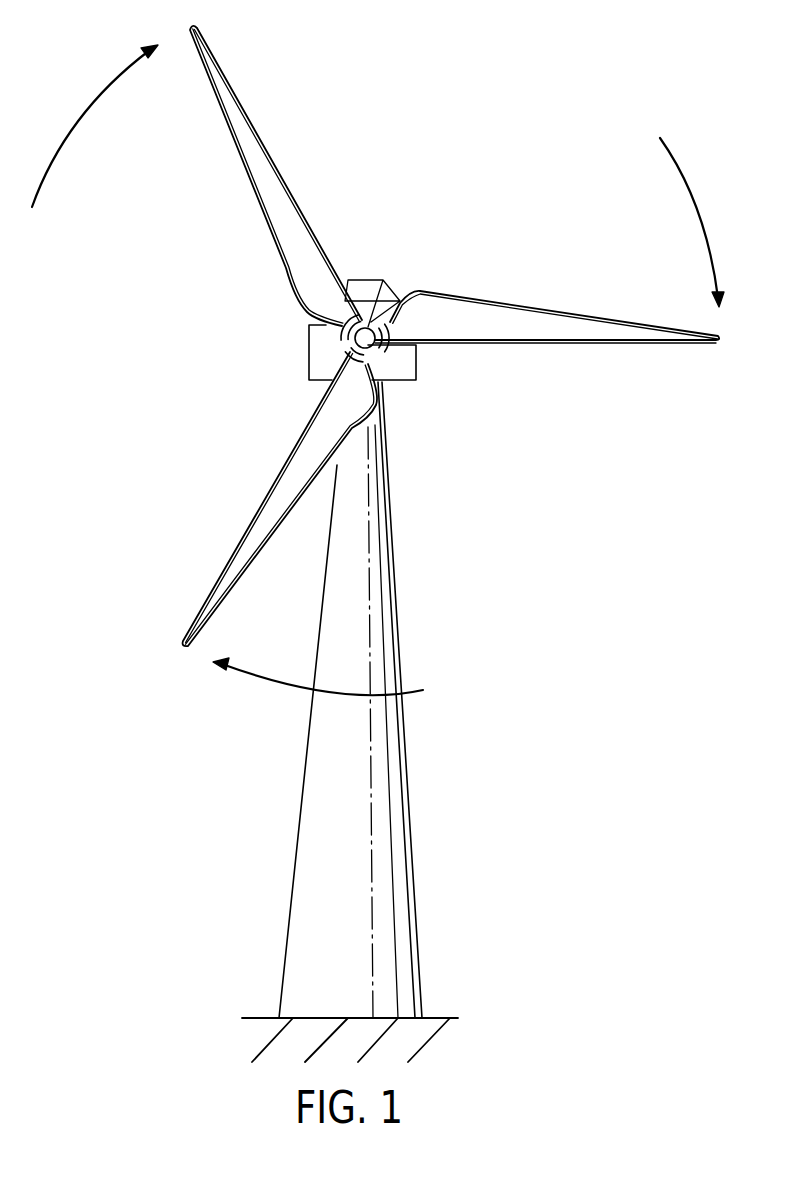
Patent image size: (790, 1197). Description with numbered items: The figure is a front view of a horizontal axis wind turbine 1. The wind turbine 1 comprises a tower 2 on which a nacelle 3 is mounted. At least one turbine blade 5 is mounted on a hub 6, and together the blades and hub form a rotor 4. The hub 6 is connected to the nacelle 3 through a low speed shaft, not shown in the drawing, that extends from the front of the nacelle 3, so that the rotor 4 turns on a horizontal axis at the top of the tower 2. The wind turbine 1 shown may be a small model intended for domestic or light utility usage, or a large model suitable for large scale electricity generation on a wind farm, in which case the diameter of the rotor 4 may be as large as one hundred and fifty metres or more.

The wind turbine 1 is at (528, 842).
The tower 2 is at (403, 745).
The nacelle 3 is at (417, 370).
The rotor 4 is at (510, 165).
The turbine blade 5 is at (539, 315).
The hub 6 is at (383, 280).